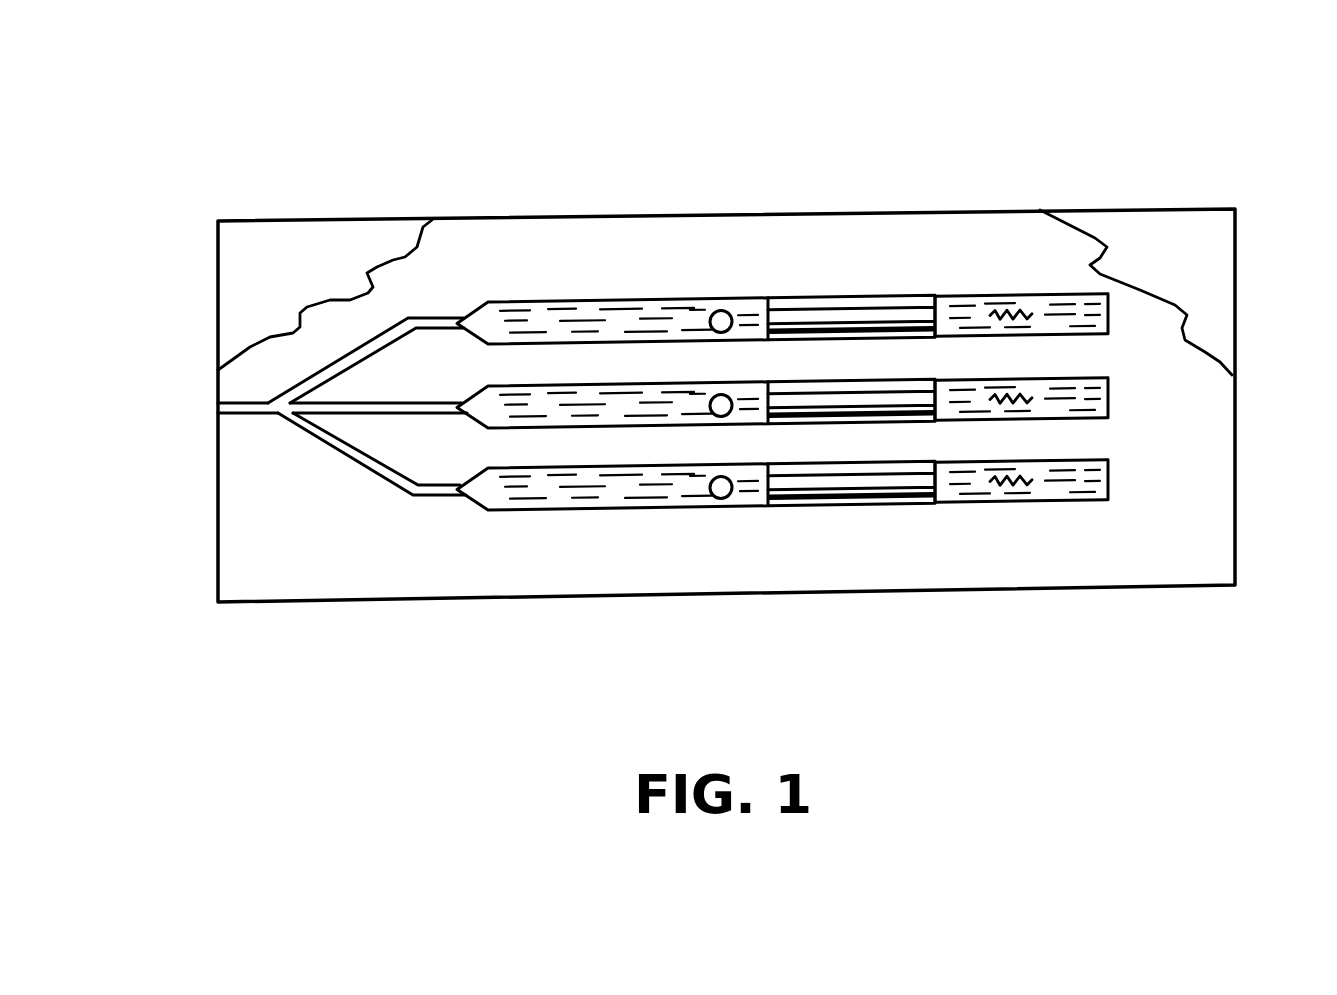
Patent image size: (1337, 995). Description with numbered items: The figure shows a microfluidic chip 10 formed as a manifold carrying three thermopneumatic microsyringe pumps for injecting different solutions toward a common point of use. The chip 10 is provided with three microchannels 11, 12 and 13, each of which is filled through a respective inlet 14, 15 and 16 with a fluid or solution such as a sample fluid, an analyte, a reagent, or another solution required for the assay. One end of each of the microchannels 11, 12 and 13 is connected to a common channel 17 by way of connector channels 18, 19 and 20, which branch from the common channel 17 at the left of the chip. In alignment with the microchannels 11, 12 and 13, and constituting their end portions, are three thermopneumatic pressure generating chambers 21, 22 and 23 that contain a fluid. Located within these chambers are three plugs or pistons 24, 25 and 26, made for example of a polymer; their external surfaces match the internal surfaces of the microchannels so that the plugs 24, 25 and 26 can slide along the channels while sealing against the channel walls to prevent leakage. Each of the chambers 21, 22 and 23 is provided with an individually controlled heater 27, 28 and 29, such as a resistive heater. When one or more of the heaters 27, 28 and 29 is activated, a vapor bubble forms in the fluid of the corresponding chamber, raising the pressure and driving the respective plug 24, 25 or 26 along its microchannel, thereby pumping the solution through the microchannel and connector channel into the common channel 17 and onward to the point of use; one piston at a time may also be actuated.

The microfluidic chip 10 is at (578, 79).
The microchannel 11 is at (567, 510).
The microchannel 12 is at (562, 380).
The microchannel 13 is at (580, 300).
The inlet 14 is at (725, 506).
The inlet 15 is at (713, 392).
The inlet 16 is at (727, 310).
The common channel 17 is at (255, 418).
The connector channel 18 is at (368, 470).
The connector channel 19 is at (367, 400).
The connector channel 20 is at (322, 373).
The thermopneumatic chamber 21 is at (970, 503).
The thermopneumatic chamber 22 is at (1108, 386).
The thermopneumatic chamber 23 is at (1113, 308).
The plug or piston 24 is at (862, 488).
The plug or piston 25 is at (875, 395).
The plug or piston 26 is at (830, 313).
The heater 27 is at (1020, 492).
The heater 28 is at (1027, 393).
The heater 29 is at (1007, 310).